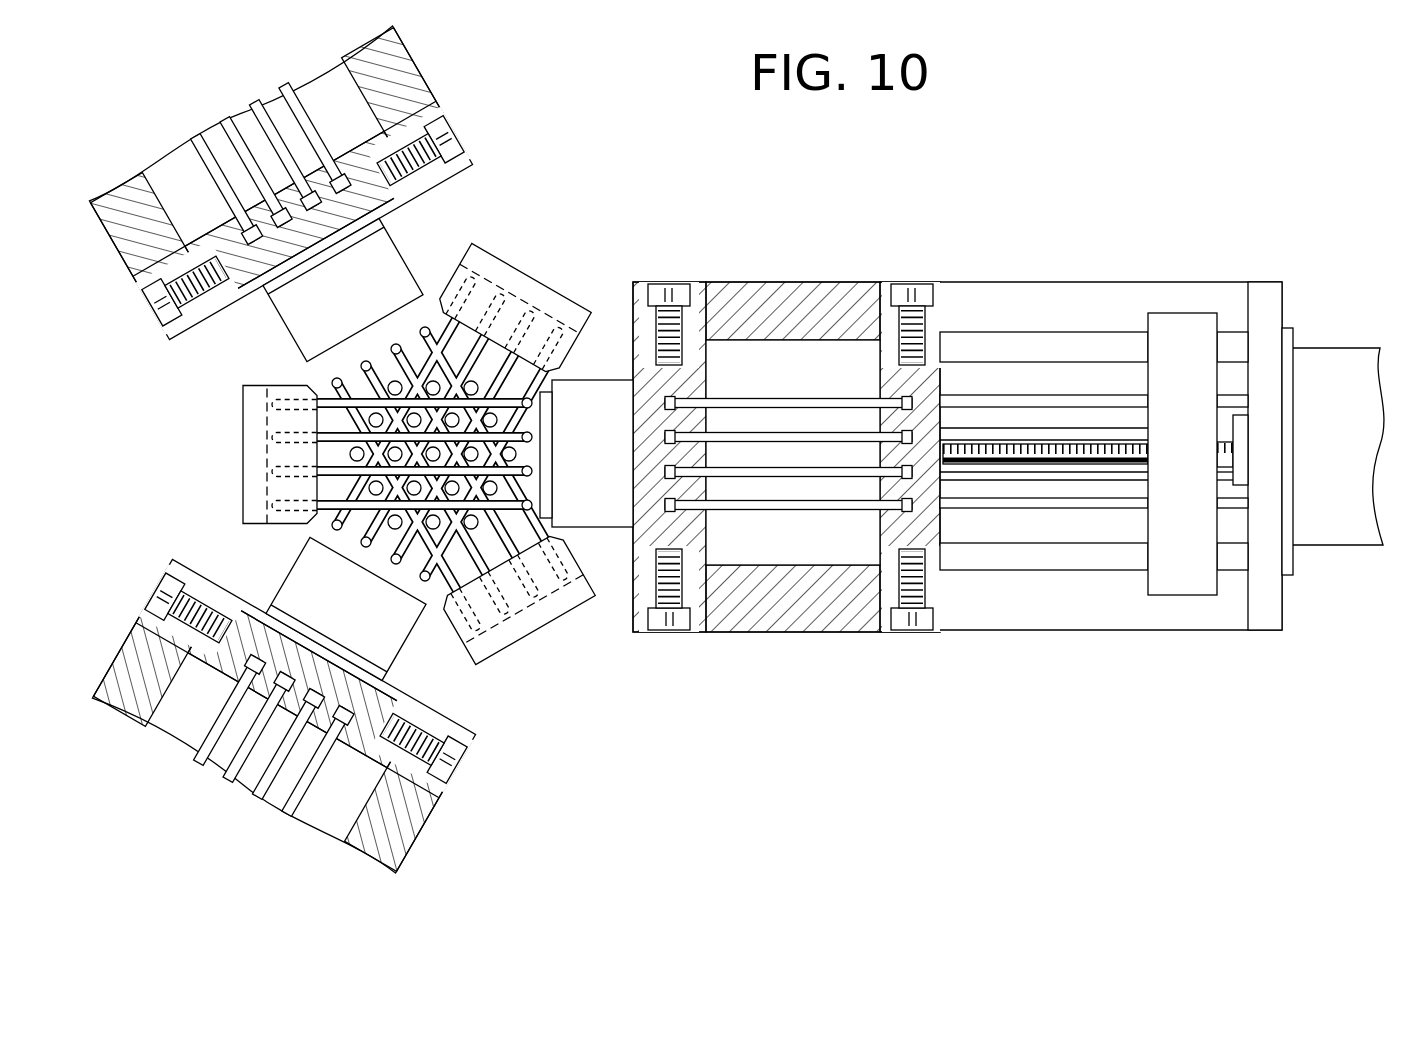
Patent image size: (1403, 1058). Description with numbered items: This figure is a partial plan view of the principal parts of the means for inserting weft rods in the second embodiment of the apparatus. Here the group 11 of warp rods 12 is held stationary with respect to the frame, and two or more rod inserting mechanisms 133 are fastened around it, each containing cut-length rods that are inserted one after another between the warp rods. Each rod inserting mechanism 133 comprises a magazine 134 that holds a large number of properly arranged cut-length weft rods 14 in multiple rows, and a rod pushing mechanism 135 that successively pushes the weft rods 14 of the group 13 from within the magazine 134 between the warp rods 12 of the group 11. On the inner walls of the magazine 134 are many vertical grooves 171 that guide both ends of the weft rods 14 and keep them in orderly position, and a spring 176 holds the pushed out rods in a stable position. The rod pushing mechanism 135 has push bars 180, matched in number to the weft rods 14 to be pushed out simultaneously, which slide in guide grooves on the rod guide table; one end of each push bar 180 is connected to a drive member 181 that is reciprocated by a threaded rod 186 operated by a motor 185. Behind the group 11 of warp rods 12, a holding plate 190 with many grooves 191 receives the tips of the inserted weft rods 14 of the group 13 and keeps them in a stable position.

The group of warp rods 11 is at (338, 453).
The warp rods 12 is at (505, 590).
The group of weft rods 13 is at (553, 297).
The weft rods 14 is at (826, 512).
The rod inserting mechanism 133 is at (872, 492).
The magazine 134 is at (752, 650).
The rod pushing mechanism 135 is at (1323, 632).
The vertical grooves 171 is at (870, 400).
The spring 176 is at (593, 385).
The push bars 180 is at (990, 400).
The drive member 181 is at (1185, 330).
The motor 185 is at (1330, 362).
The threaded rod 186 is at (1060, 448).
The holding plate 190 is at (344, 337).
The grooves 191 is at (275, 497).